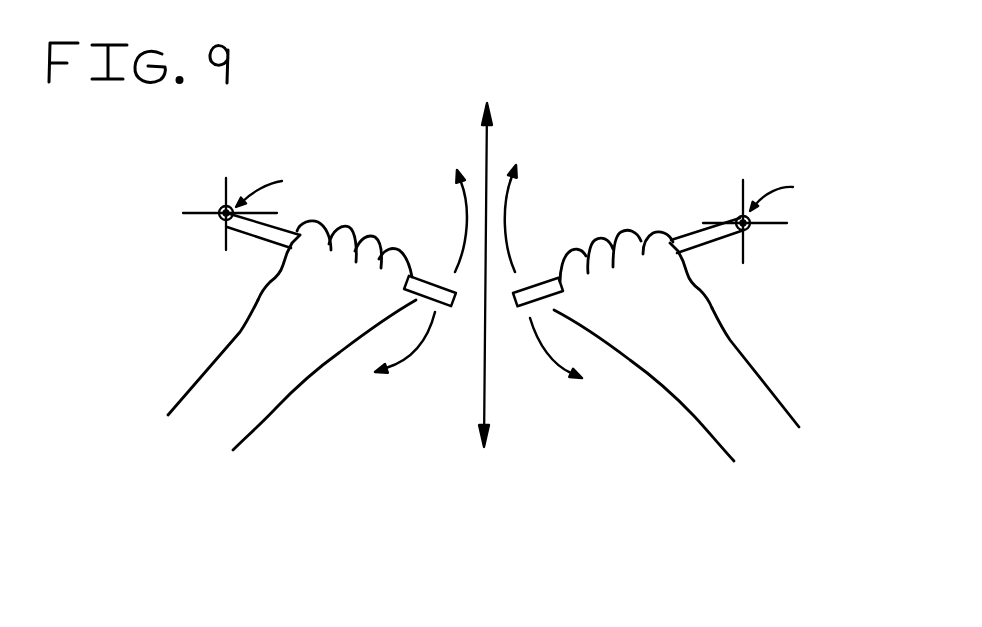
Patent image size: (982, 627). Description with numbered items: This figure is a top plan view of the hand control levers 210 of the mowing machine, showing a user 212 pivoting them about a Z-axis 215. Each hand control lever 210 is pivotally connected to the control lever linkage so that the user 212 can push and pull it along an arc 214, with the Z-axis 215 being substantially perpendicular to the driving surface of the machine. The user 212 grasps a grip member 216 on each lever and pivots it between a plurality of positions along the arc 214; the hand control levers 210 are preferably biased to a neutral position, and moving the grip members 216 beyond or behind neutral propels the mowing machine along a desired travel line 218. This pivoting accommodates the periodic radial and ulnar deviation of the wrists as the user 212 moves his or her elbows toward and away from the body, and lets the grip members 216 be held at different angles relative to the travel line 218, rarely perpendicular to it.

The hand control lever 210 is at (256, 246).
The user 212 is at (195, 373).
The arc 214 is at (466, 223).
The Z-axis 215 is at (295, 163).
The grip member 216 is at (275, 242).
The travel line 218 is at (491, 141).